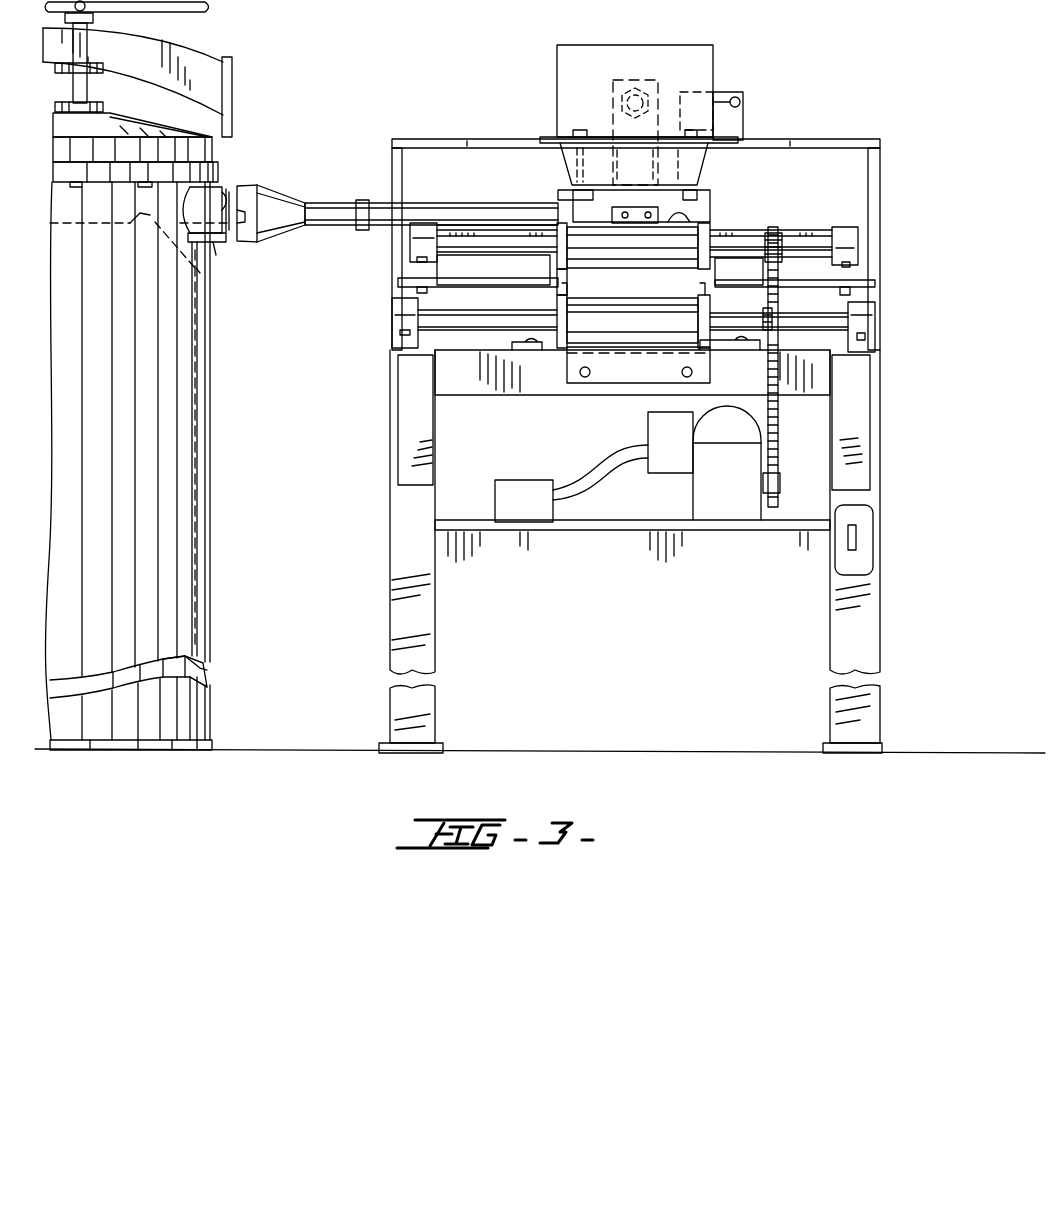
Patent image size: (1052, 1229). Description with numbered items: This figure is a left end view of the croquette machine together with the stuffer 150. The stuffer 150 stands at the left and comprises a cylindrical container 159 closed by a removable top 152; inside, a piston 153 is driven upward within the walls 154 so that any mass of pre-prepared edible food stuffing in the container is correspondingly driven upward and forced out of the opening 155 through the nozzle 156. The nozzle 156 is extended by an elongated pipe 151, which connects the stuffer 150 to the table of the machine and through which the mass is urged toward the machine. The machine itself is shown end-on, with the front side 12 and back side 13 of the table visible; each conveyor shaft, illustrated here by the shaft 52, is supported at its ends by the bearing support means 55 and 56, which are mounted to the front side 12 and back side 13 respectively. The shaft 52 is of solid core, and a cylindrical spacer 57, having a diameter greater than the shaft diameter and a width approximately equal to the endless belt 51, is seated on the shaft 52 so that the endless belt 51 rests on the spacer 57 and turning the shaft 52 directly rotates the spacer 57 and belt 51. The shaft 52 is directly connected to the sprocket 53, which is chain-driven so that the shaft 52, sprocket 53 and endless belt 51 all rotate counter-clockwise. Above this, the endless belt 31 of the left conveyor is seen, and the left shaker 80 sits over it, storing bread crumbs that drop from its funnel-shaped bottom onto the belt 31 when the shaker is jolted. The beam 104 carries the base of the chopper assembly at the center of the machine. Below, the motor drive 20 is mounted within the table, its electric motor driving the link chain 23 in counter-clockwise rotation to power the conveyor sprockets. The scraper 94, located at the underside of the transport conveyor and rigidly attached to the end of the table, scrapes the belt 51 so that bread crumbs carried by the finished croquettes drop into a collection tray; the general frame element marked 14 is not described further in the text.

The front side 12 is at (880, 290).
The back side 13 is at (396, 282).
The main frame 14 is at (850, 123).
The motor drive 20 is at (678, 488).
The link chain 23 is at (778, 447).
The endless belt 31 is at (645, 256).
The endless belt 51 is at (616, 298).
The shaft 52 is at (788, 316).
The sprocket 53 is at (762, 313).
The bearing support means 55 is at (875, 322).
The bearing support means 56 is at (392, 309).
The cylindrical spacer 57 is at (557, 298).
The left shaker 80 is at (650, 45).
The scraper 94 is at (617, 385).
The beam 104 is at (505, 283).
The stuffer 150 is at (278, 462).
The elongated pipe 151 is at (382, 190).
The removable top 152 is at (214, 165).
The piston 153 is at (200, 273).
The walls 154 is at (203, 663).
The opening 155 is at (216, 255).
The nozzle 156 is at (285, 200).
The cylindrical container 159 is at (205, 396).